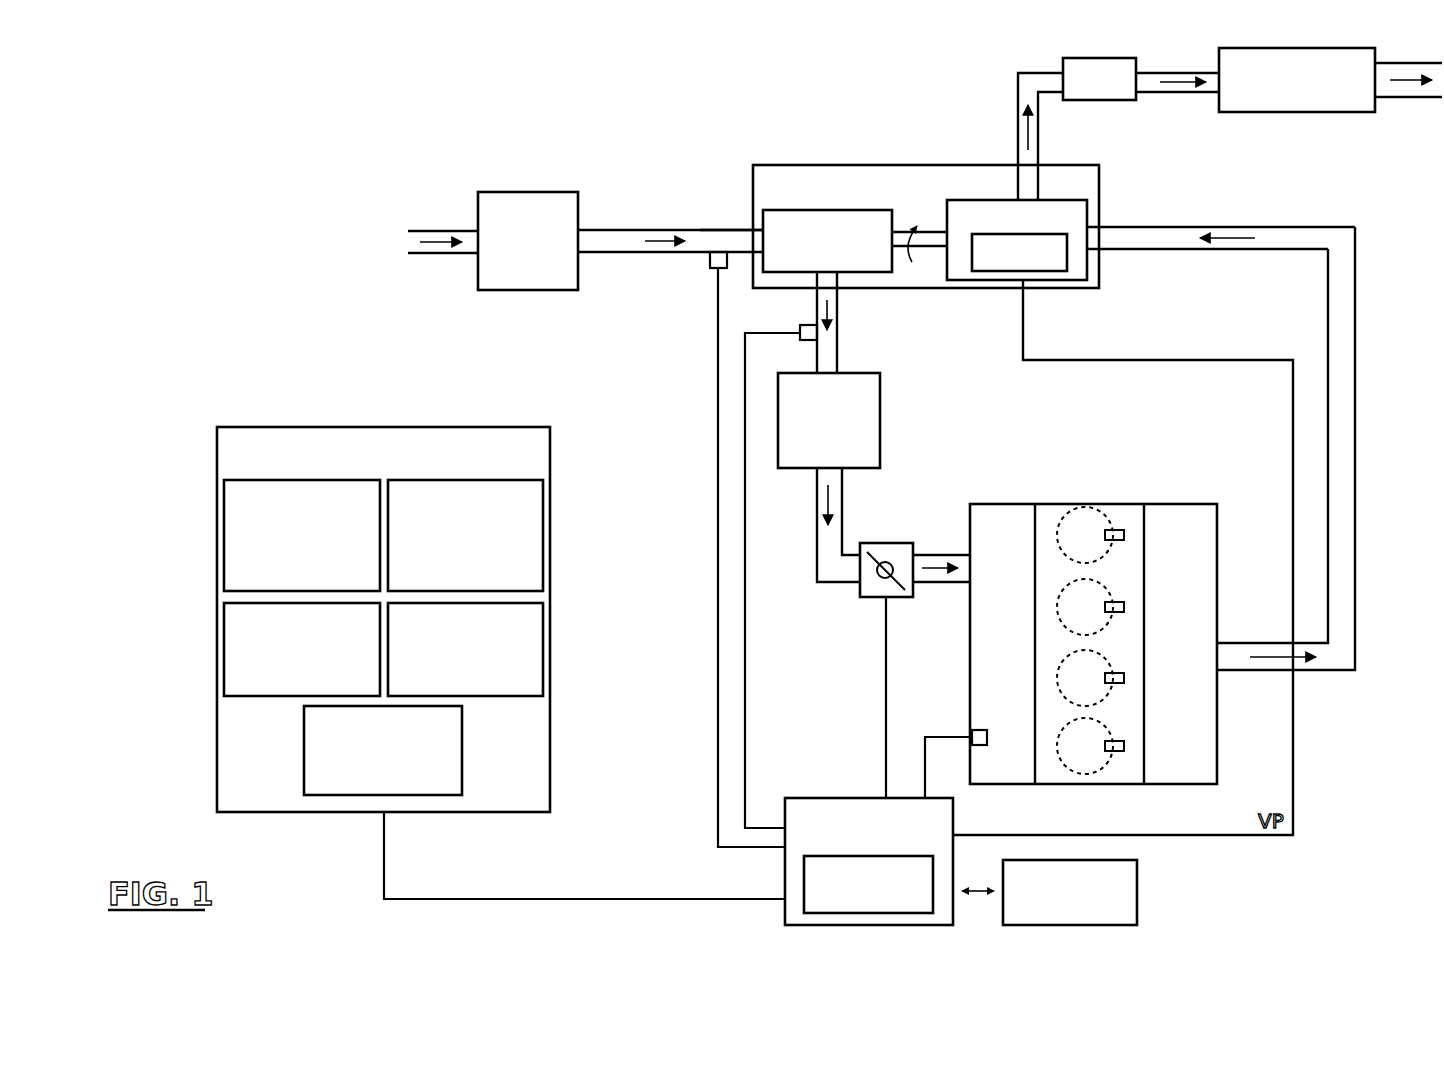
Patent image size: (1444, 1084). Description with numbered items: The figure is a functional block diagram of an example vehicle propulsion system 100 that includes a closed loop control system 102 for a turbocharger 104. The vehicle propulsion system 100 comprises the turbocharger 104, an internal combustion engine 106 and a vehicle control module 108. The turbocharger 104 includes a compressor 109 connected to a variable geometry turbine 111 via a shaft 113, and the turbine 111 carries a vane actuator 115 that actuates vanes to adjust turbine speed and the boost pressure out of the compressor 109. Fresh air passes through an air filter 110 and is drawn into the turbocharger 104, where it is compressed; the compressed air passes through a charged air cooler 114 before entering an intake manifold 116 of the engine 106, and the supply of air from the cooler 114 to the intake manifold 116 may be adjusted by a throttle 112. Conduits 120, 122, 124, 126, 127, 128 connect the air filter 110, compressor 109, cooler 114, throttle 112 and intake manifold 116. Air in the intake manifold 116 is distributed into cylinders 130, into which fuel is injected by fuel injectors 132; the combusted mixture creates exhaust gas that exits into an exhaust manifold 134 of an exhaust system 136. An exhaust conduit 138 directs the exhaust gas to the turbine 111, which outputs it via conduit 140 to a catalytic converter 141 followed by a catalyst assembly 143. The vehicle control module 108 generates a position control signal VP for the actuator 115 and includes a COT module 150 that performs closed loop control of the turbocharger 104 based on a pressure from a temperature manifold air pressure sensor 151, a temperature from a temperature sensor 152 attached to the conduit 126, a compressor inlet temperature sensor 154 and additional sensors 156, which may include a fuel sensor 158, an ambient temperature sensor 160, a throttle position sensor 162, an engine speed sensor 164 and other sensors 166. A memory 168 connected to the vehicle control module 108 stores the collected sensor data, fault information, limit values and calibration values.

The vehicle propulsion system 100 is at (195, 145).
The closed loop control system 102 is at (575, 927).
The turbocharger 104 is at (1099, 182).
The internal combustion engine 106 is at (1055, 504).
The vehicle control module 108 is at (818, 798).
The compressor 109 is at (797, 210).
The air filter 110 is at (527, 192).
The variable geometry turbine 111 is at (1087, 214).
The throttle 112 is at (940, 519).
The shaft 113 is at (933, 252).
The charged air cooler 114 is at (880, 396).
The vane actuator 115 is at (1067, 258).
The intake manifold 116 is at (970, 522).
The conduit 120 is at (432, 256).
The conduit 122 is at (632, 254).
The conduit 124 is at (752, 230).
The conduit 126 is at (840, 345).
The conduit 127 is at (827, 584).
The conduit 128 is at (928, 584).
The cylinders 130 is at (1110, 514).
The fuel injectors 132 is at (1124, 536).
The exhaust manifold 134 is at (1217, 532).
The exhaust system 136 is at (1348, 706).
The exhaust conduit 138 is at (1252, 228).
The conduit 140 is at (1018, 100).
The catalytic converter 141 is at (1100, 100).
The catalyst assembly 143 is at (1290, 112).
The COT module 150 is at (870, 913).
The temperature manifold air pressure sensor 151 is at (978, 730).
The temperature sensor 152 is at (800, 332).
The compressor inlet temperature sensor 154 is at (718, 270).
The additional sensors 156 is at (262, 427).
The fuel sensor 158 is at (224, 516).
The ambient temperature sensor 160 is at (543, 516).
The throttle position sensor 162 is at (224, 611).
The engine speed sensor 164 is at (543, 641).
The other sensors 166 is at (304, 742).
The memory 168 is at (1137, 880).